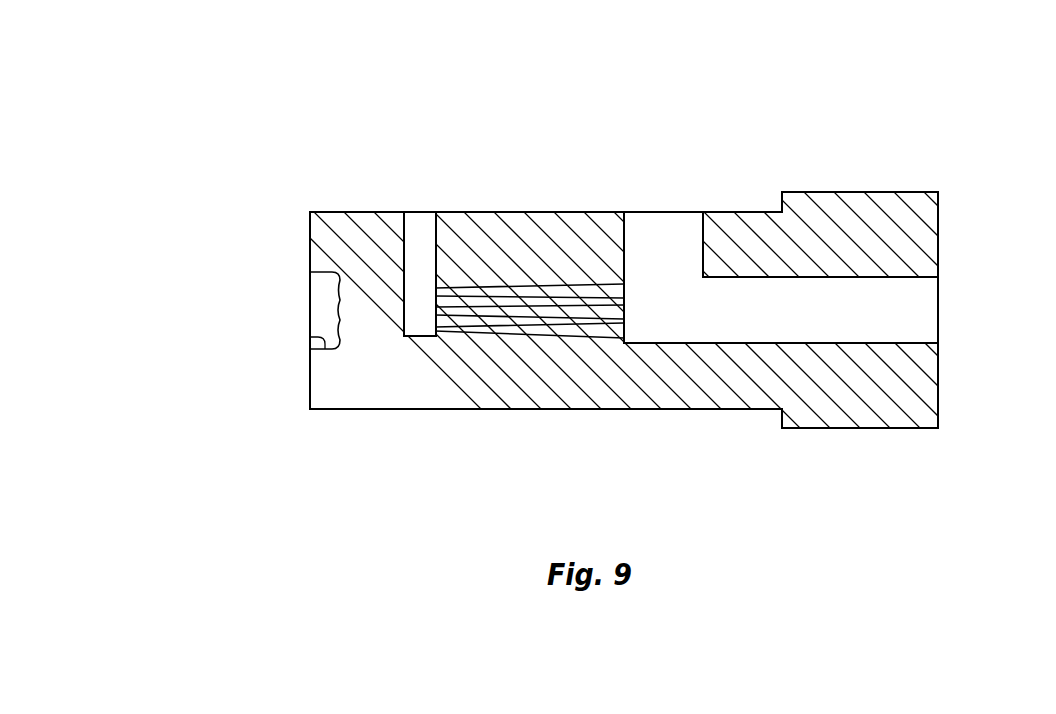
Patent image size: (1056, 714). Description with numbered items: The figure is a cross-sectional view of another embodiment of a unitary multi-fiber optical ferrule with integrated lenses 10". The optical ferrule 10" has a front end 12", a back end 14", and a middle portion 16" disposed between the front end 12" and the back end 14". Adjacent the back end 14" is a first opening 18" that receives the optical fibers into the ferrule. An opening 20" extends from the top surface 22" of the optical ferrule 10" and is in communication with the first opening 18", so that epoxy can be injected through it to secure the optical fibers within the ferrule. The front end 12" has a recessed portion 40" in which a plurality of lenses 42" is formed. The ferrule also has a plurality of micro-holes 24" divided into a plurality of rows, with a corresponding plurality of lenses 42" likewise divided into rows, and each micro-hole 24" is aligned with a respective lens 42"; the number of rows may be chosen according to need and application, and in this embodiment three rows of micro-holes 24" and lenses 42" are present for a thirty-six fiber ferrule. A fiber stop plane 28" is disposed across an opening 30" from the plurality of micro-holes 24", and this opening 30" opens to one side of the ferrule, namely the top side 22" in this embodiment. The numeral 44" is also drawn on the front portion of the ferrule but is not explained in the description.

The unitary multi-fiber optical ferrule with integrated lenses 10 is at (763, 106).
The front end 12 is at (300, 228).
The back end 14 is at (940, 220).
The middle portion 16 is at (705, 420).
The first opening 18 is at (928, 305).
The opening 20 is at (675, 210).
The top surface 22 is at (513, 210).
The micro-holes 24 is at (608, 290).
The fiber stop plane 28 is at (410, 230).
The opening 30 is at (429, 225).
The recessed portion 40 is at (308, 338).
The lenses 42 is at (340, 338).
The front wall 44 is at (308, 373).